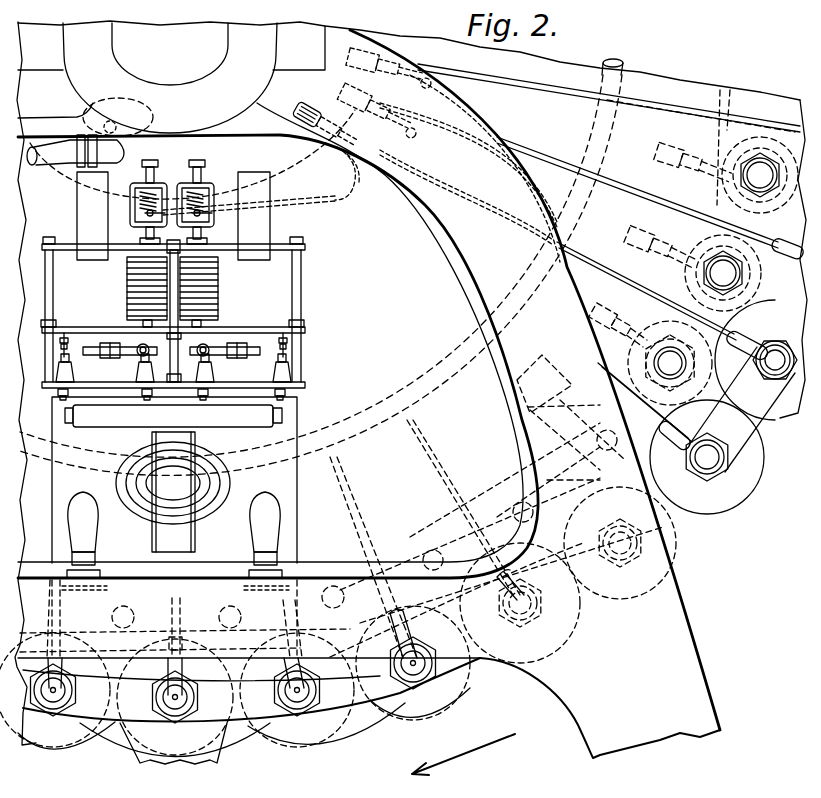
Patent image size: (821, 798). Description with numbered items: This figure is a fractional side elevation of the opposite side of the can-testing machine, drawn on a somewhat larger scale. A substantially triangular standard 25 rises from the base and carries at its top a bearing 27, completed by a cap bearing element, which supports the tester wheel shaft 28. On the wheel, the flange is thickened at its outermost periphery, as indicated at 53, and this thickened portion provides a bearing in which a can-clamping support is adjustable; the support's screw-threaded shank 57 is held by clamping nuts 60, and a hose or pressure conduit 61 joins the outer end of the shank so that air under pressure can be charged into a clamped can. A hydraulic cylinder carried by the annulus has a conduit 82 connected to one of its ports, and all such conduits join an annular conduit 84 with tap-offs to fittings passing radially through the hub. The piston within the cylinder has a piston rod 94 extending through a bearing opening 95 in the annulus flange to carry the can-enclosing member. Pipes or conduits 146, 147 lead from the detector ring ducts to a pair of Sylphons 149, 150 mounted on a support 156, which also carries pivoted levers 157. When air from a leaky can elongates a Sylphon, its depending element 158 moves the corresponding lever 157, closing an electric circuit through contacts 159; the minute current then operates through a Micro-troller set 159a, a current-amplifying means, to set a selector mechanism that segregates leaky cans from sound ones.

The triangular standard 25 is at (535, 394).
The bearing 27 is at (170, 78).
The tester wheel shaft 28 is at (170, 54).
The thickened portion of flange 53 is at (687, 500).
The screw-threaded shank 57 is at (720, 465).
The clamping nuts 60 is at (727, 457).
The hose or pressure conduit 61 is at (57, 690).
The conduit 82 is at (611, 258).
The annular conduit 84 is at (410, 384).
The piston rod 94 is at (675, 370).
The bearing opening 95 is at (728, 266).
The pipe or conduit 146 is at (335, 176).
The pipe or conduit 147 is at (340, 200).
The Sylphon 149 is at (127, 285).
The Sylphon 150 is at (218, 287).
The support 156 is at (300, 289).
The pivoted levers 157 is at (130, 353).
The depending elements 158 is at (203, 338).
The contacts 159 is at (87, 312).
The Micro-troller set 159a is at (157, 540).